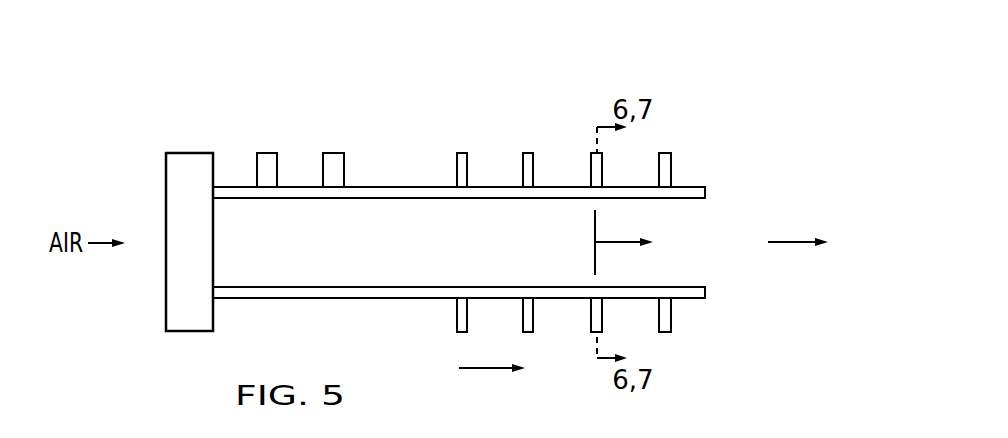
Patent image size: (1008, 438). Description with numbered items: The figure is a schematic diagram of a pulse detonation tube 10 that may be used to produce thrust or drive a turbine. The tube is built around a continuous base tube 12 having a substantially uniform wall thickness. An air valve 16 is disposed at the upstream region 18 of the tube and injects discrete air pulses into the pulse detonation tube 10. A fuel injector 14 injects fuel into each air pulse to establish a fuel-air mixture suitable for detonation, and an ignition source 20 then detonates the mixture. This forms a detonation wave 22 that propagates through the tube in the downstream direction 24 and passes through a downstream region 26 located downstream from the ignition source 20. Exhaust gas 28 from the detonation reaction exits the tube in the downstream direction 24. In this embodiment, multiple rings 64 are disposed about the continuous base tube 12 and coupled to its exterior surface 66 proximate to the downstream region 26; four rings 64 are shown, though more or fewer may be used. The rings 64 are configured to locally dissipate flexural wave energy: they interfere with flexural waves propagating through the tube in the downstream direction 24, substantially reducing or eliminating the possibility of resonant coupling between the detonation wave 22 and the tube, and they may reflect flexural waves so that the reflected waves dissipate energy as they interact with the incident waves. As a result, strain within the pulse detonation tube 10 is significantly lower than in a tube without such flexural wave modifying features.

The pulse detonation tube 10 is at (426, 86).
The continuous base tube 12 is at (412, 187).
The fuel injector 14 is at (265, 152).
The air valve 16 is at (188, 153).
The upstream region 18 is at (244, 112).
The ignition source 20 is at (329, 152).
The detonation wave 22 is at (595, 230).
The downstream direction 24 is at (472, 368).
The downstream region 26 is at (637, 71).
The exhaust gas 28 is at (790, 243).
The rings 64 is at (460, 152).
The exterior surface 66 is at (487, 187).